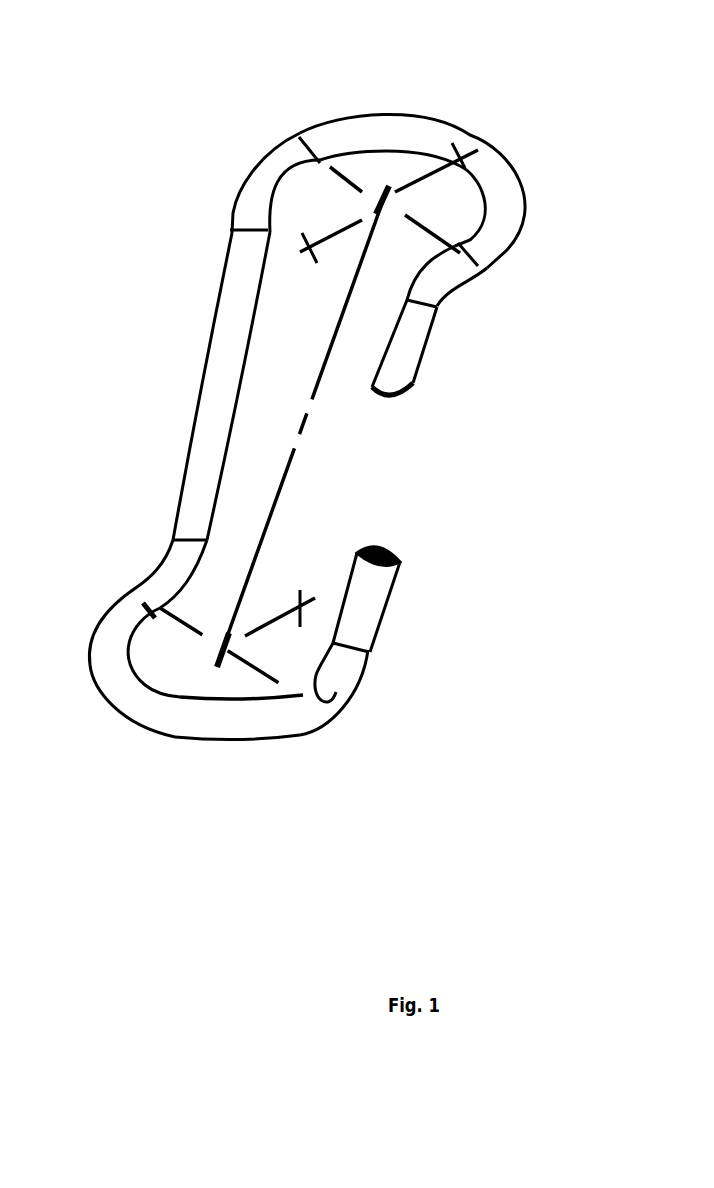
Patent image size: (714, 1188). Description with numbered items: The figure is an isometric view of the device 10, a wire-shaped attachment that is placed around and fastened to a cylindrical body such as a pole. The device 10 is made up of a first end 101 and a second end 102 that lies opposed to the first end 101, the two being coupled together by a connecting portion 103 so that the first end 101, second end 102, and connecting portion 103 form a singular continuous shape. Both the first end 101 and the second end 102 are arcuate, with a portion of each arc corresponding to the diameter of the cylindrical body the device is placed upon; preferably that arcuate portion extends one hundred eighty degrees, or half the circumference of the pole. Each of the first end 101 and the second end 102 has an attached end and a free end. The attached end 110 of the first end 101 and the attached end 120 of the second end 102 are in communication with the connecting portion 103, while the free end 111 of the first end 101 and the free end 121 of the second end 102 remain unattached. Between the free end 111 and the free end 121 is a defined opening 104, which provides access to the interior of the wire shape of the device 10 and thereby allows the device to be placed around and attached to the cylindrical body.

The device 10 is at (232, 106).
The first end 101 is at (497, 150).
The second end 102 is at (165, 703).
The connecting portion 103 is at (215, 370).
The opening 104 is at (393, 467).
The attached end 110 is at (245, 192).
The free end 111 is at (413, 375).
The attached end 120 is at (177, 570).
The free end 121 is at (380, 602).